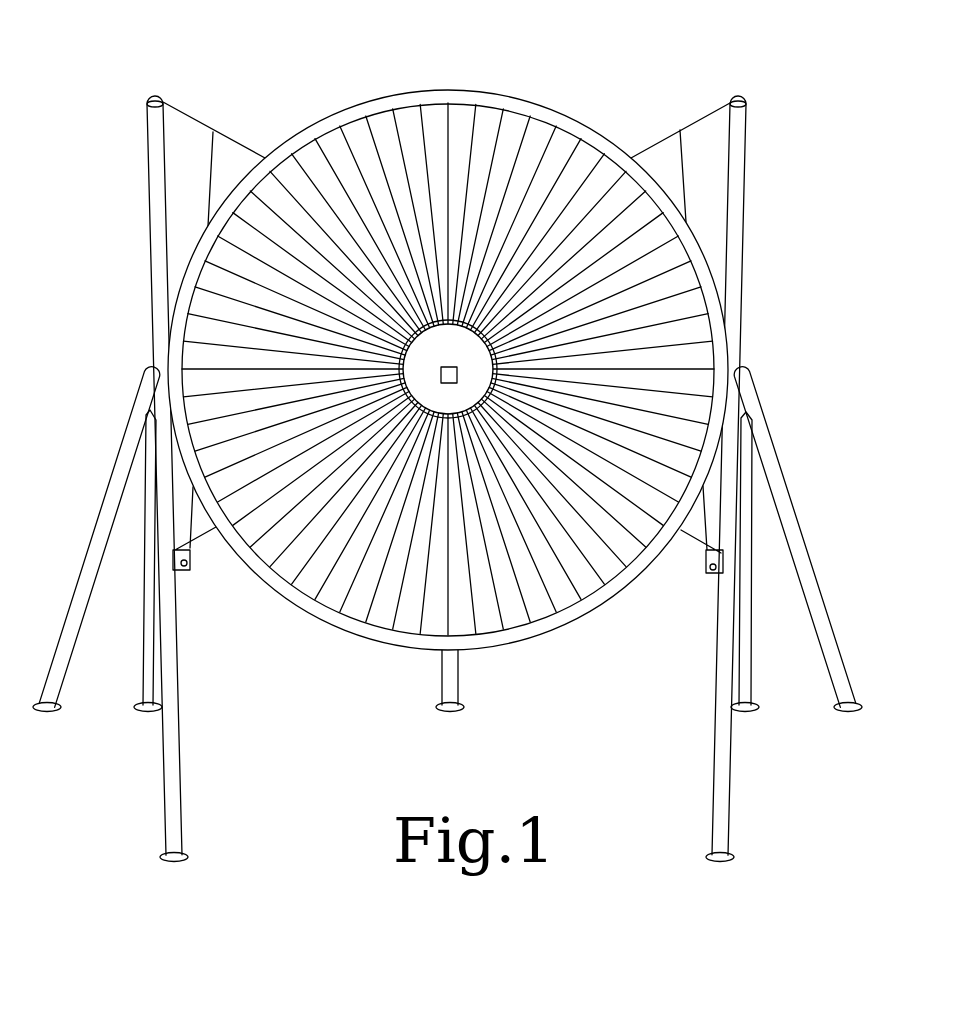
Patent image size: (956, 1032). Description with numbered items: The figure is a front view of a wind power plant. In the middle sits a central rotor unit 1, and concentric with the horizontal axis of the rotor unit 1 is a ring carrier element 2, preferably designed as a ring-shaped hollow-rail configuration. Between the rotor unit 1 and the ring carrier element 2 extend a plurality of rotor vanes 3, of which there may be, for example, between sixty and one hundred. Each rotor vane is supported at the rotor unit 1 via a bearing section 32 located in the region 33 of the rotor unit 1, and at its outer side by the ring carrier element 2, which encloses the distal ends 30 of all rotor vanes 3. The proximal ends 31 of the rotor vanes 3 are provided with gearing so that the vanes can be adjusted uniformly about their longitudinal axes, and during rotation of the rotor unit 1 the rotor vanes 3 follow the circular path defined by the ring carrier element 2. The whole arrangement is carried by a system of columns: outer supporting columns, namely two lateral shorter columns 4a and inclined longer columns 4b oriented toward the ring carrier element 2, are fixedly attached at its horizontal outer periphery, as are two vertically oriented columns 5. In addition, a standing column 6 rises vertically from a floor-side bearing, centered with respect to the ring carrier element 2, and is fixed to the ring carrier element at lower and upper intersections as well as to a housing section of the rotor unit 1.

The rotor unit 1 is at (407, 375).
The ring carrier element 2 is at (542, 96).
The rotor vanes 3 is at (637, 214).
The distal ends of the rotor vanes 30 is at (667, 256).
The proximal ends of the rotor vanes 31 is at (497, 358).
The bearing section 32 is at (503, 400).
The region of the rotor unit 33 is at (457, 366).
The lateral shorter supporting columns 4a is at (100, 518).
The inclined longer supporting columns 4b is at (178, 808).
The vertical columns 5 is at (148, 668).
The standing column 6 is at (453, 684).